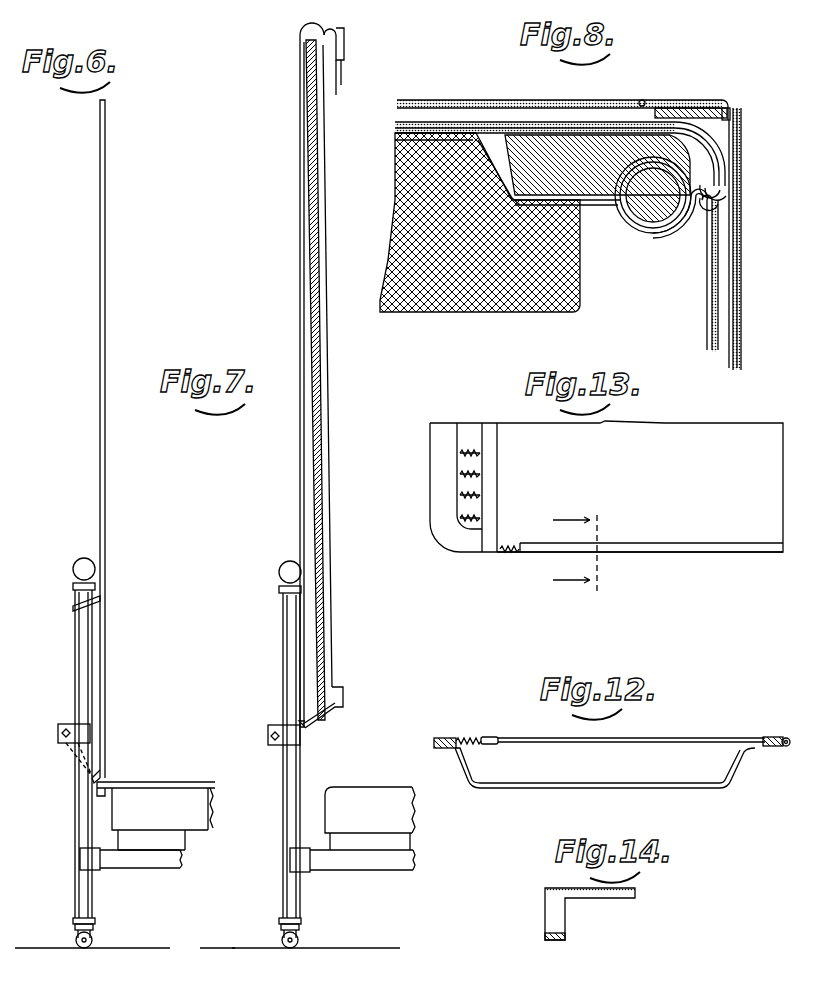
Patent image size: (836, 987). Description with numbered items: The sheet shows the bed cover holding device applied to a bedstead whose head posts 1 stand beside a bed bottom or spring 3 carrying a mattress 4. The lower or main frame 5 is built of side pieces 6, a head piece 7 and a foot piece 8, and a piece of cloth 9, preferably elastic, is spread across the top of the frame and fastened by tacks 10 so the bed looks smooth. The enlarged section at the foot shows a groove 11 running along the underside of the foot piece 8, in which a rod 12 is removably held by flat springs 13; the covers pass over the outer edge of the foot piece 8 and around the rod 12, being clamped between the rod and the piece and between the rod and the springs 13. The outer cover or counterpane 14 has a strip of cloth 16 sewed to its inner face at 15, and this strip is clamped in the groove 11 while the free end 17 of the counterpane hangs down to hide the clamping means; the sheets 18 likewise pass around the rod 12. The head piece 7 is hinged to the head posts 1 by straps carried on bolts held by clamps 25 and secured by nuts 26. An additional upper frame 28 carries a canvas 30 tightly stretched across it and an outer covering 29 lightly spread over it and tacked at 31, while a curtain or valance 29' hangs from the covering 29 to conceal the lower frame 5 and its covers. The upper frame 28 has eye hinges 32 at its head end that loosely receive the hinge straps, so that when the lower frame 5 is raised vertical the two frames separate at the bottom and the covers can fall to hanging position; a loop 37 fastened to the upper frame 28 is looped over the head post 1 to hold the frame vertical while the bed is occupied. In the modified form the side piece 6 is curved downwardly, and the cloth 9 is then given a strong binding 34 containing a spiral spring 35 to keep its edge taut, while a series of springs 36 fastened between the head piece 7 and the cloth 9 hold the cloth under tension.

In FIG. 6, the head post 1 is at (88, 664).
In FIG. 7, the head post 1 is at (287, 650).
In FIG. 6, the bed bottom or spring 3 is at (160, 846).
In FIG. 7, the bed bottom or spring 3 is at (373, 846).
In FIG. 6, the mattress 4 is at (194, 826).
In FIG. 7, the mattress 4 is at (386, 826).
In FIG. 8, the mattress 4 is at (428, 303).
In FIG. 7, the lower or main frame 5 is at (329, 591).
In FIG. 13, the side piece 6 is at (545, 555).
In FIG. 12, the side piece 6 is at (518, 788).
In FIG. 14, the side piece 6 is at (566, 922).
In FIG. 13, the head piece 7 is at (430, 464).
In FIG. 12, the head piece 7 is at (440, 737).
In FIG. 8, the foot piece 8 is at (522, 134).
In FIG. 12, the foot piece 8 is at (770, 736).
In FIG. 8, the piece of cloth 9 is at (637, 86).
In FIG. 13, the piece of cloth 9 is at (622, 481).
In FIG. 12, the piece of cloth 9 is at (640, 743).
In FIG. 8, the tack 10 is at (731, 199).
In FIG. 8, the groove 11 is at (700, 170).
In FIG. 8, the rod 12 is at (661, 220).
In FIG. 12, the rod 12 is at (770, 750).
In FIG. 8, the flat spring 13 is at (633, 228).
In FIG. 12, the flat spring 13 is at (785, 748).
In FIG. 8, the outer cover or counterpane 14 is at (410, 121).
In FIG. 13, the outer cover or counterpane 14 is at (587, 551).
In FIG. 8, the sewed seam 15 is at (735, 186).
In FIG. 8, the strip of cloth 16 is at (722, 202).
In FIG. 8, the free end of outer cover 17 is at (742, 276).
In FIG. 7, the sheet 18 is at (318, 446).
In FIG. 8, the sheet 18 is at (456, 121).
In FIG. 6, the clamp 25 is at (88, 734).
In FIG. 7, the clamp 25 is at (297, 742).
In FIG. 6, the nut 26 is at (64, 724).
In FIG. 7, the nut 26 is at (268, 729).
In FIG. 6, the upper frame 28 is at (105, 451).
In FIG. 7, the upper frame 28 is at (305, 516).
In FIG. 8, the upper frame 28 is at (700, 100).
In FIG. 8, the outer covering 29 is at (562, 92).
In FIG. 8, the curtain or valance 29' is at (759, 244).
In FIG. 8, the canvas 30 is at (648, 99).
In FIG. 8, the tacking 31 is at (742, 113).
In FIG. 6, the eye hinge 32 is at (100, 780).
In FIG. 7, the eye hinge 32 is at (310, 722).
In FIG. 13, the binding 34 is at (663, 547).
In FIG. 13, the spiral spring 35 is at (515, 556).
In FIG. 13, the spring 36 is at (468, 498).
In FIG. 12, the spring 36 is at (470, 737).
In FIG. 6, the loop 37 is at (103, 602).